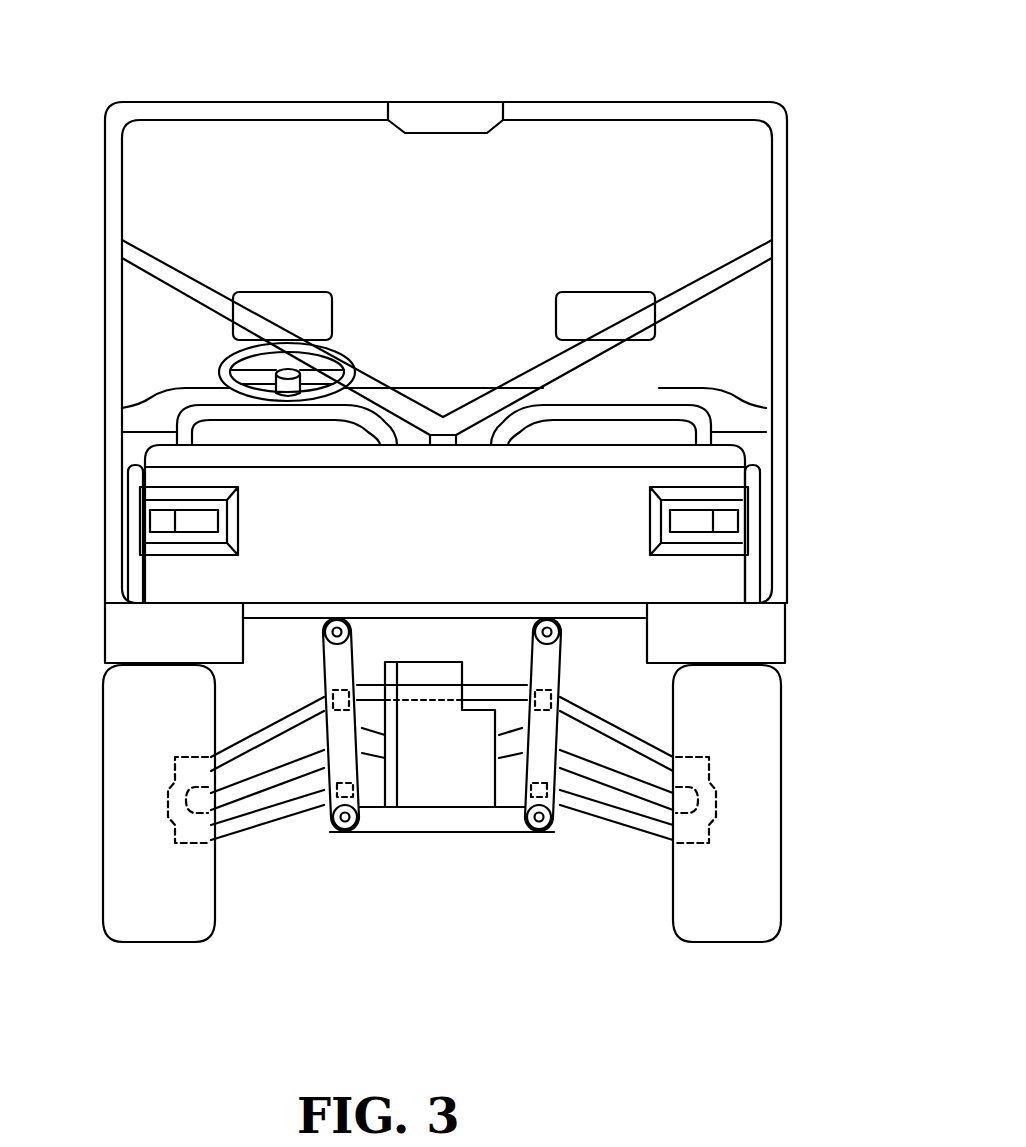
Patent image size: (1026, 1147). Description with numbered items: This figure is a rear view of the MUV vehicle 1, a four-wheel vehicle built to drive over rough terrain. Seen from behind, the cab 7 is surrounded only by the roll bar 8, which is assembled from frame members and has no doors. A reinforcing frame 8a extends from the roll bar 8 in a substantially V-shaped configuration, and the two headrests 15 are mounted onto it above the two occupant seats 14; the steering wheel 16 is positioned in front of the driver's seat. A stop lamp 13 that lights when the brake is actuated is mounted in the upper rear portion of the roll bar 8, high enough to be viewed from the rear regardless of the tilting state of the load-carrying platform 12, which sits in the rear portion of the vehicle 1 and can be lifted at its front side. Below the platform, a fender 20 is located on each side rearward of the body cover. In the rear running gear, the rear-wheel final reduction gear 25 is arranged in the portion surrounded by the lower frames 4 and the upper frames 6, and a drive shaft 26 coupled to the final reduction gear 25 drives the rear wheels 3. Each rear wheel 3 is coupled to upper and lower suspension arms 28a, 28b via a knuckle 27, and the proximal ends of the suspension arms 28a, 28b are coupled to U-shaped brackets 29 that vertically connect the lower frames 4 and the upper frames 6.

The MUV vehicle 1 is at (856, 70).
The rear wheel 3 is at (442, 833).
The lower frame 4 is at (442, 763).
The upper frame 6 is at (441, 665).
The cab 7 is at (457, 231).
The roll bar 8 is at (788, 197).
The reinforcing frame 8a is at (170, 268).
The load-carrying platform 12 is at (722, 503).
The stop lamp 13 is at (498, 127).
The occupant seat 14 is at (122, 437).
The headrest 15 is at (444, 297).
The steering wheel 16 is at (222, 365).
The fender 20 is at (105, 637).
The rear-wheel final reduction gear 25 is at (442, 792).
The drive shaft 26 is at (442, 818).
The knuckle 27 is at (439, 800).
The upper suspension arm 28a is at (442, 734).
The lower suspension arm 28b is at (442, 865).
The U-shaped bracket 29 is at (442, 826).